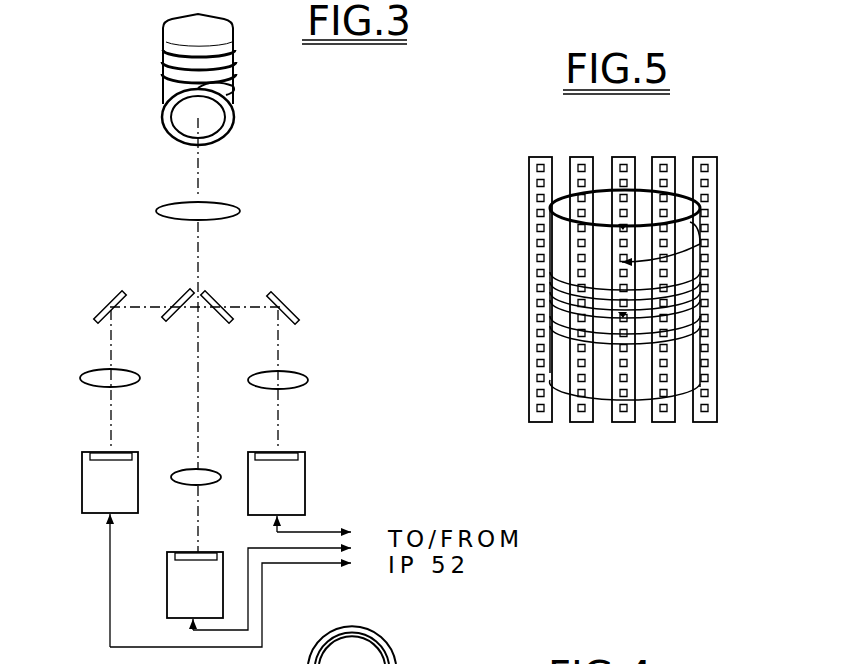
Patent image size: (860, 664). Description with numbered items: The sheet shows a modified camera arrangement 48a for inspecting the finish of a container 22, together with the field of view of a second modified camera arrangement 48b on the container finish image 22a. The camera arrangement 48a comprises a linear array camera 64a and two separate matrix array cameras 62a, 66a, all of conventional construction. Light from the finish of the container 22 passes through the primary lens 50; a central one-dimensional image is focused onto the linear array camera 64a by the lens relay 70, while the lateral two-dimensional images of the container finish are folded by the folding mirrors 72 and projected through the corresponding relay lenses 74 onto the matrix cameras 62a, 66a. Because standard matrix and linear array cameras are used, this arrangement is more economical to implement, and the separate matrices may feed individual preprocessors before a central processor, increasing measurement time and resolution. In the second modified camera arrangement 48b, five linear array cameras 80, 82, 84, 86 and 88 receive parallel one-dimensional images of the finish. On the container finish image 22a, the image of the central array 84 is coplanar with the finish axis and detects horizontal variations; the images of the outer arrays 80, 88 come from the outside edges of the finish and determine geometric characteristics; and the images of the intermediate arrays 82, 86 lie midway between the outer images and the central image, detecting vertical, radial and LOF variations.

In FIG. 3, the container 22 is at (240, 108).
In FIG. 3, the primary lens 50 is at (228, 211).
In FIG. 3, the folding mirrors 72 is at (177, 288).
In FIG. 3, the relay lenses 74 is at (252, 378).
In FIG. 3, the lens relay 70 is at (201, 472).
In FIG. 3, the matrix array camera 62a is at (92, 513).
In FIG. 3, the linear array camera 64a is at (173, 588).
In FIG. 3, the matrix array camera 66a is at (301, 496).
In FIG. 3, the modified camera arrangement 48a is at (393, 258).
In FIG. 5, the second modified camera arrangement 48b is at (800, 112).
In FIG. 5, the container finish image 22a is at (687, 195).
In FIG. 5, the linear array camera 80 is at (545, 426).
In FIG. 5, the linear array camera 82 is at (582, 427).
In FIG. 5, the linear array camera 84 is at (625, 427).
In FIG. 5, the linear array camera 86 is at (668, 427).
In FIG. 5, the linear array camera 88 is at (710, 427).